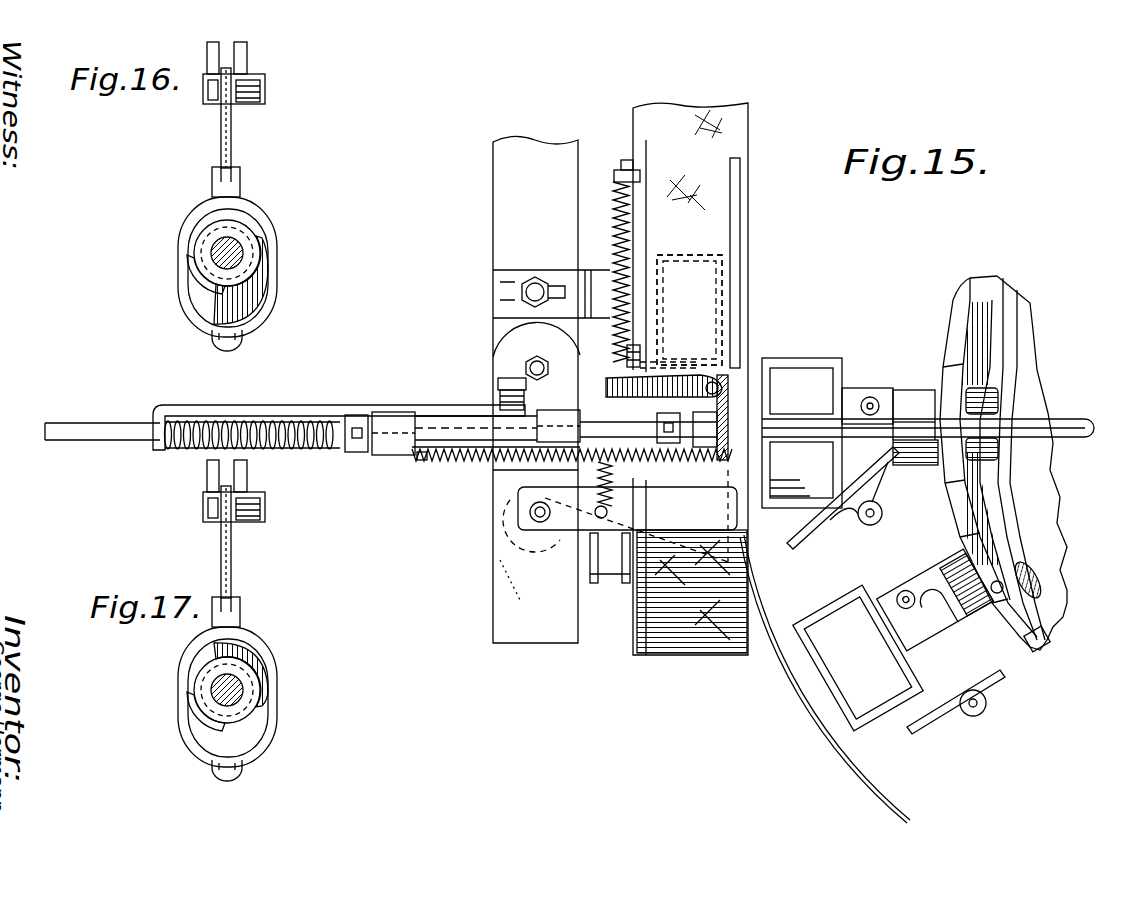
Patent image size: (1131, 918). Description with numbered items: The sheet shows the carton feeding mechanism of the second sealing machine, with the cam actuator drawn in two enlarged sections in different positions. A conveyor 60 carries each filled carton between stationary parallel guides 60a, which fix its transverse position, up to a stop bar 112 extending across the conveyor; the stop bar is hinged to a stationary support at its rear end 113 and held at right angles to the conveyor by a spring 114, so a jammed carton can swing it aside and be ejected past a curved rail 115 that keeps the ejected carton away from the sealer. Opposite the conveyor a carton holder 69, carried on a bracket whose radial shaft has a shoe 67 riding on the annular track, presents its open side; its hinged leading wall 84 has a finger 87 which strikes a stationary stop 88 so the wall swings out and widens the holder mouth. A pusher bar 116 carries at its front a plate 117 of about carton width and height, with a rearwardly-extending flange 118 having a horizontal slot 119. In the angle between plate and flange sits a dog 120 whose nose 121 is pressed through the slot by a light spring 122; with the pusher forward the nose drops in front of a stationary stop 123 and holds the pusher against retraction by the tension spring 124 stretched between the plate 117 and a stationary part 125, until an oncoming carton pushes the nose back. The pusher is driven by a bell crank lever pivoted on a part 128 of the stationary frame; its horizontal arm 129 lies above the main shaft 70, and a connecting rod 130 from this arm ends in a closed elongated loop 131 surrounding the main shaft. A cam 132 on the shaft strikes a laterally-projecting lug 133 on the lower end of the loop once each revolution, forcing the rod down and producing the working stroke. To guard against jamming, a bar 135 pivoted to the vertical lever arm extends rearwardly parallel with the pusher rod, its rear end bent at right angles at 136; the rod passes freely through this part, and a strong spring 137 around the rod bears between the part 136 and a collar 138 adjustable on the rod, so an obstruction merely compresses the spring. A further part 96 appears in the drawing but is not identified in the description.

In FIG. 15, the conveyor 60 is at (748, 132).
In FIG. 15, the stationary parallel guides 60a is at (748, 212).
In FIG. 15, the shoe 67 is at (957, 387).
In FIG. 15, the carton holder 69 is at (870, 590).
In FIG. 16, the main shaft 70 is at (200, 268).
In FIG. 17, the main shaft 70 is at (220, 712).
In FIG. 15, the hinged side wall 84 is at (810, 528).
In FIG. 15, the finger 87 is at (870, 472).
In FIG. 15, the stationary stop 88 is at (905, 468).
In FIG. 15, the shaft 96 is at (1000, 410).
In FIG. 15, the stop bar 112 is at (620, 526).
In FIG. 15, the hinge of stop bar 113 is at (518, 515).
In FIG. 15, the spring 114 is at (748, 276).
In FIG. 15, the curved rail 115 is at (778, 672).
In FIG. 15, the pusher bar 116 is at (447, 458).
In FIG. 15, the pusher plate 117 is at (746, 374).
In FIG. 15, the rearwardly-extending flange 118 is at (616, 368).
In FIG. 15, the horizontal slot 119 is at (703, 367).
In FIG. 15, the dog 120 is at (661, 419).
In FIG. 15, the nose 121 is at (640, 385).
In FIG. 15, the light spring 122 is at (698, 417).
In FIG. 15, the stationary stop 123 is at (640, 356).
In FIG. 15, the tension spring 124 is at (476, 460).
In FIG. 15, the stationary part 125 is at (422, 462).
In FIG. 16, the stationary frame part 128 is at (213, 62).
In FIG. 17, the stationary frame part 128 is at (213, 480).
In FIG. 16, the horizontal arm of bell crank lever 129 is at (243, 65).
In FIG. 17, the horizontal arm of bell crank lever 129 is at (243, 483).
In FIG. 16, the connecting rod 130 is at (232, 140).
In FIG. 17, the connecting rod 130 is at (232, 560).
In FIG. 16, the closed elongated loop 131 is at (180, 238).
In FIG. 17, the closed elongated loop 131 is at (180, 678).
In FIG. 16, the cam 132 is at (272, 277).
In FIG. 17, the cam 132 is at (270, 663).
In FIG. 16, the lug 133 is at (240, 342).
In FIG. 17, the lug 133 is at (226, 782).
In FIG. 15, the bar 135 is at (492, 386).
In FIG. 15, the bent end of bar 136 is at (160, 452).
In FIG. 15, the strong spring 137 is at (338, 456).
In FIG. 15, the collar 138 is at (370, 455).